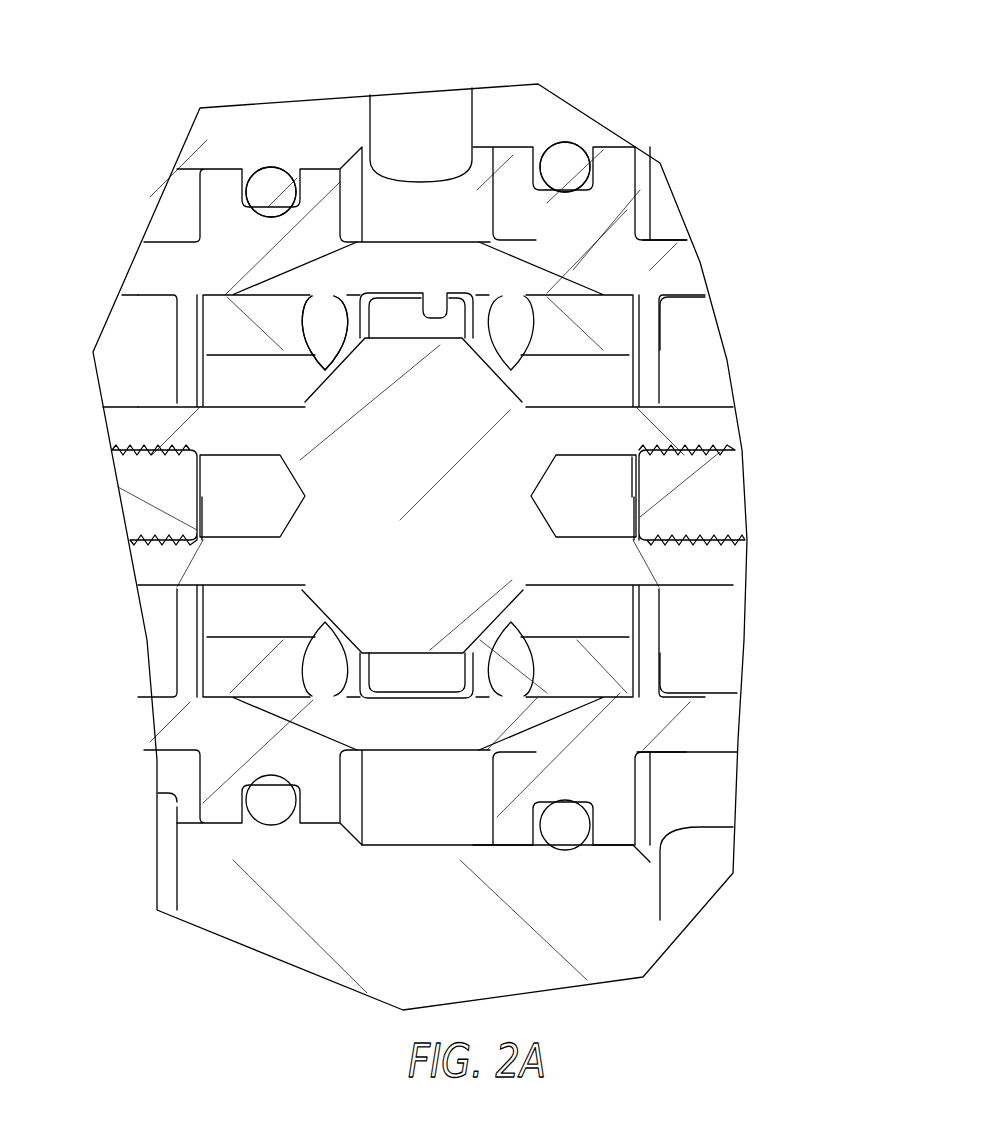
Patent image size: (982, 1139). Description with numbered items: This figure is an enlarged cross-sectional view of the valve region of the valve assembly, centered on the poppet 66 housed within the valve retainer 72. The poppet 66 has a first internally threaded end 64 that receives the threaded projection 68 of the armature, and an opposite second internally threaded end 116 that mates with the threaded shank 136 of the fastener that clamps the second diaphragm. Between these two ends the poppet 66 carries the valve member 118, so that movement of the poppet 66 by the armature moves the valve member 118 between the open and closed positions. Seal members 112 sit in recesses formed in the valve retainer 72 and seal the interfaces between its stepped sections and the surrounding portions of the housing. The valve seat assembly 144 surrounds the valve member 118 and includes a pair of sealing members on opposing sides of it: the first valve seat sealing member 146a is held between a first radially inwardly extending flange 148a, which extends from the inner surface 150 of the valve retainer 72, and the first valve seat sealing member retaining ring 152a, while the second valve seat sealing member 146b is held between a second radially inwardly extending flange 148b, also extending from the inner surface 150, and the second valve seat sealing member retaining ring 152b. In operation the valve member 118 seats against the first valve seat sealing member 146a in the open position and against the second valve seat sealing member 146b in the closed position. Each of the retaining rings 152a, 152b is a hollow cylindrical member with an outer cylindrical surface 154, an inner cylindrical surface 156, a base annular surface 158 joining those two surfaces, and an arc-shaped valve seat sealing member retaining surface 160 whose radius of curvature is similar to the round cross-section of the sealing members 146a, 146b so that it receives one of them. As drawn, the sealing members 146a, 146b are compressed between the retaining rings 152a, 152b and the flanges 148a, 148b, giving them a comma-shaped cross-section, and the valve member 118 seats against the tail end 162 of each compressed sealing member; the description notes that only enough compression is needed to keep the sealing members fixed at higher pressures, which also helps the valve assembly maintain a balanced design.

The first internally threaded end 64 is at (722, 424).
The poppet 66 is at (700, 406).
The threaded projection 68 is at (708, 500).
The valve retainer 72 is at (702, 766).
The seal members 112 is at (271, 183).
The second internally threaded end 116 is at (150, 567).
The valve member 118 is at (412, 444).
The threaded shank 136 is at (163, 489).
The valve seat assembly 144 is at (239, 727).
The first valve seat sealing member 146a is at (513, 297).
The second valve seat sealing member 146b is at (328, 320).
The first radially inwardly extending flange 148a is at (463, 640).
The second radially inwardly extending flange 148b is at (390, 647).
The inner surface 150 is at (437, 316).
The first valve seat sealing member retaining ring 152a is at (614, 317).
The second valve seat sealing member retaining ring 152b is at (243, 330).
The outer cylindrical surface 154 is at (277, 297).
The inner cylindrical surface 156 is at (260, 633).
The base annular surface 158 is at (642, 337).
The valve seat sealing member retaining surface 160 is at (237, 665).
The tail end 162 is at (510, 635).